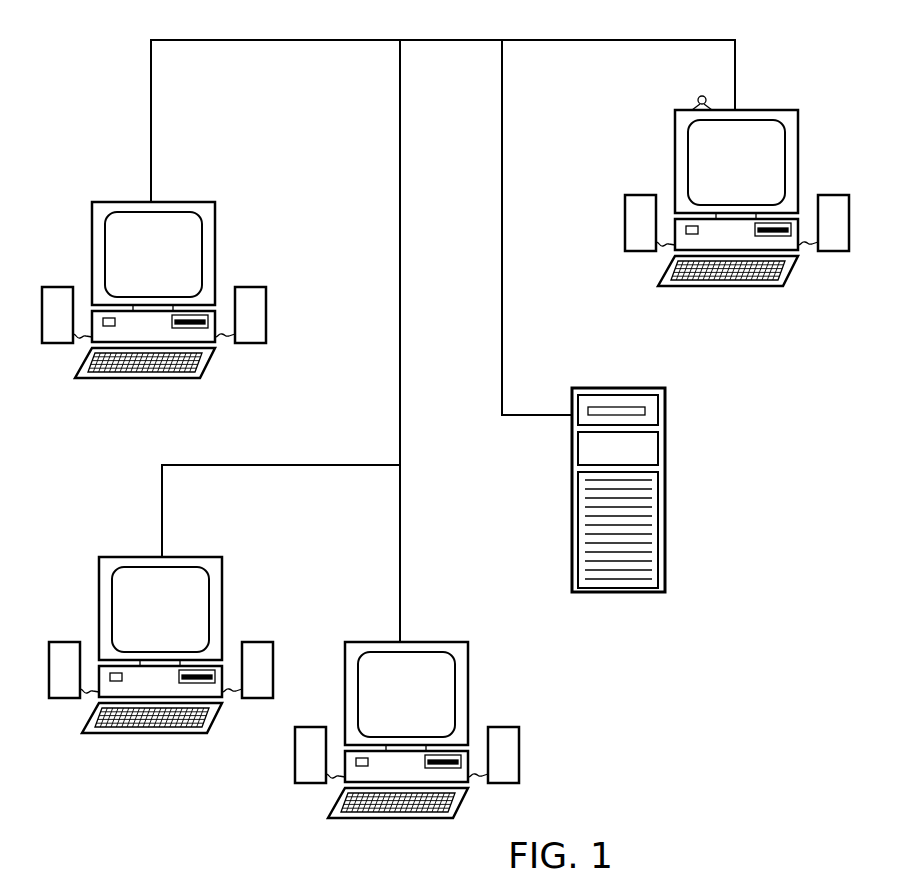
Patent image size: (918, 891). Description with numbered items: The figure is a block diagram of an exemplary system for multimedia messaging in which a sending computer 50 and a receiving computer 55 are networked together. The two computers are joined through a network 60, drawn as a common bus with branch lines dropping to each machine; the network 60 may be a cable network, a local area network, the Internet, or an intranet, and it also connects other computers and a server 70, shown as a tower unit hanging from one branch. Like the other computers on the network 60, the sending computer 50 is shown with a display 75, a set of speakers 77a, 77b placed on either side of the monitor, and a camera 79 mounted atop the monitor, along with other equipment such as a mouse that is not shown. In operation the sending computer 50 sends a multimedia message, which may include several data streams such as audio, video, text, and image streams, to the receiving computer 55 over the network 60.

The network 60 is at (268, 40).
The receiving computer 55 is at (190, 202).
The sending computer 50 is at (729, 177).
The display 75 is at (748, 172).
The speaker 77a is at (828, 193).
The speaker 77b is at (640, 193).
The camera 79 is at (698, 100).
The server 70 is at (667, 422).